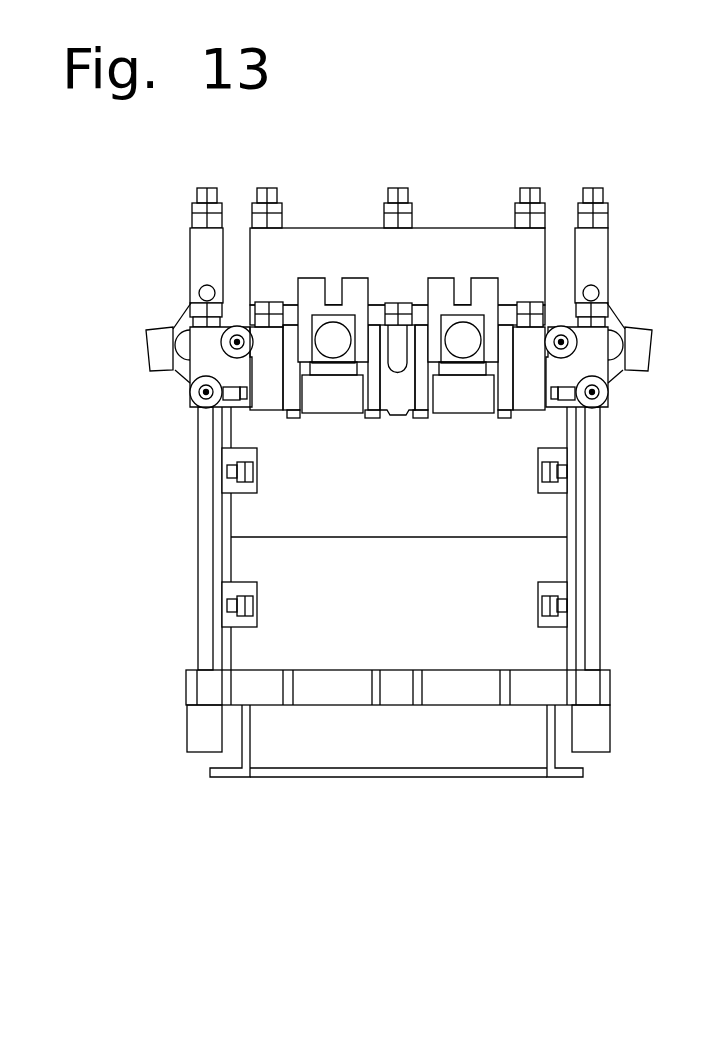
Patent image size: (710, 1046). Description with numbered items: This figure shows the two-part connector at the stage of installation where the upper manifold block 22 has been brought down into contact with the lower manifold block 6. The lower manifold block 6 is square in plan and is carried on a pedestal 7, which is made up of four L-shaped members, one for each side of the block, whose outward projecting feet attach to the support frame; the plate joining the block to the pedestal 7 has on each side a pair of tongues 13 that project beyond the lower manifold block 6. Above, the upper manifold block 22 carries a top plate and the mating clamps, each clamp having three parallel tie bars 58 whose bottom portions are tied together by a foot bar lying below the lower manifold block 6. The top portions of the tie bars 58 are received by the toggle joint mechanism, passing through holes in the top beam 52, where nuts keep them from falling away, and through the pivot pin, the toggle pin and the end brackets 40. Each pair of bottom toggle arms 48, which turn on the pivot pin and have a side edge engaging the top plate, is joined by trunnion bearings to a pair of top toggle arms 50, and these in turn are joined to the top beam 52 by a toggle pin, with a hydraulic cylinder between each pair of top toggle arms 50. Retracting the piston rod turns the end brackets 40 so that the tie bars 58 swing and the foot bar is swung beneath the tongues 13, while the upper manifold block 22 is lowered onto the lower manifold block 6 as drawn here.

The lower manifold block 6 is at (325, 556).
The pedestal 7 is at (511, 834).
The tongues 13 is at (613, 688).
The upper manifold block 22 is at (325, 518).
The end brackets 40 is at (588, 358).
The bottom toggle arms 48 is at (625, 375).
The top toggle arms 50 is at (620, 306).
The top beam 52 is at (616, 259).
The tie bars 58 is at (602, 544).